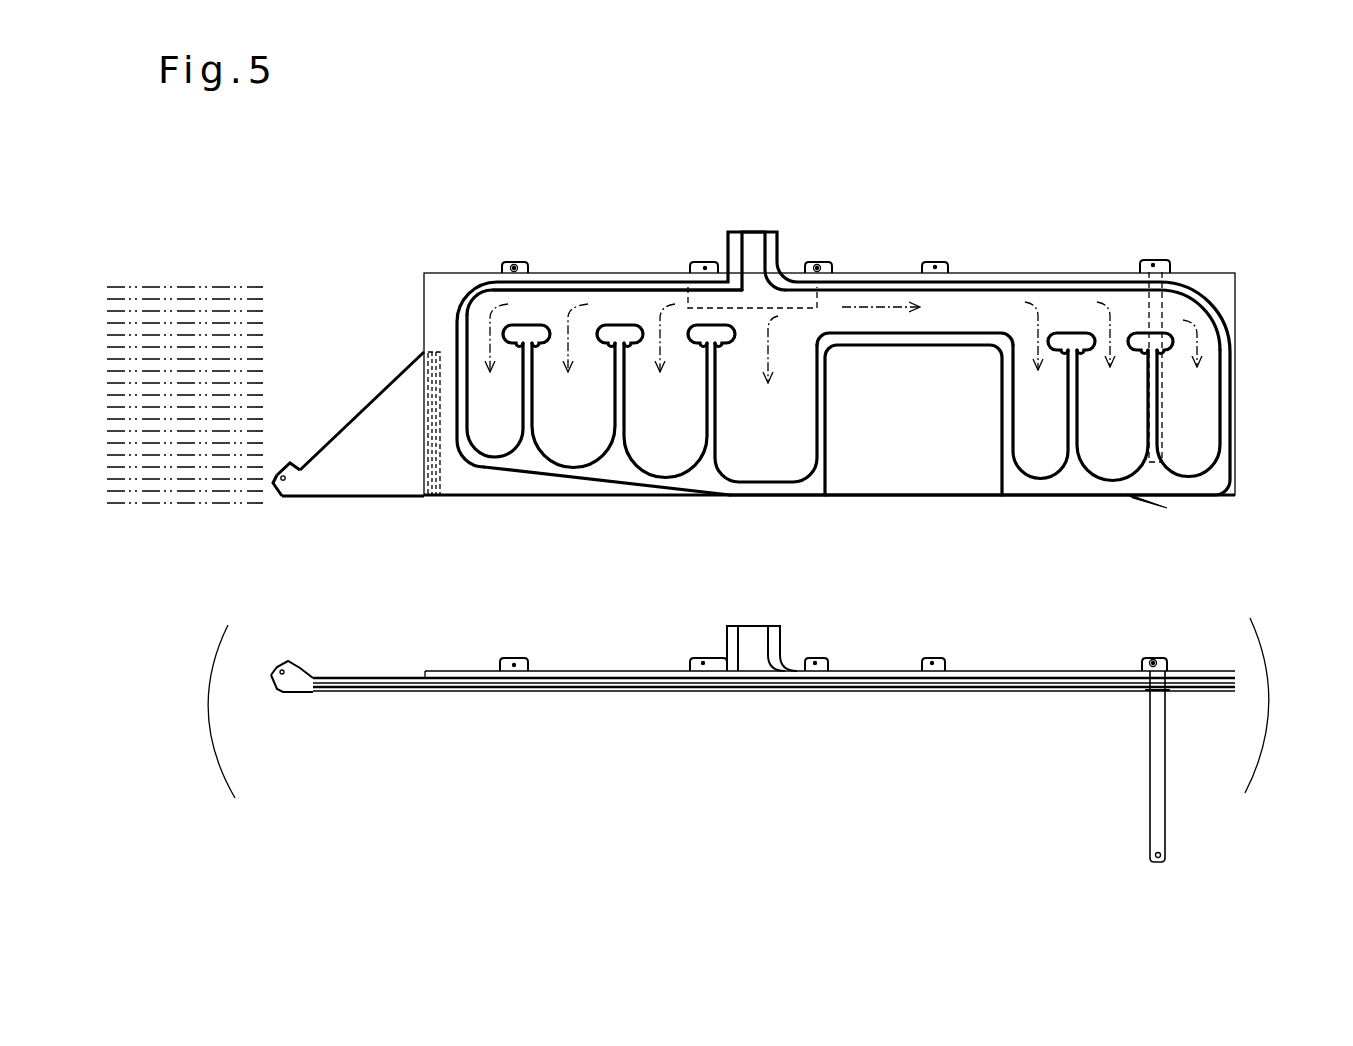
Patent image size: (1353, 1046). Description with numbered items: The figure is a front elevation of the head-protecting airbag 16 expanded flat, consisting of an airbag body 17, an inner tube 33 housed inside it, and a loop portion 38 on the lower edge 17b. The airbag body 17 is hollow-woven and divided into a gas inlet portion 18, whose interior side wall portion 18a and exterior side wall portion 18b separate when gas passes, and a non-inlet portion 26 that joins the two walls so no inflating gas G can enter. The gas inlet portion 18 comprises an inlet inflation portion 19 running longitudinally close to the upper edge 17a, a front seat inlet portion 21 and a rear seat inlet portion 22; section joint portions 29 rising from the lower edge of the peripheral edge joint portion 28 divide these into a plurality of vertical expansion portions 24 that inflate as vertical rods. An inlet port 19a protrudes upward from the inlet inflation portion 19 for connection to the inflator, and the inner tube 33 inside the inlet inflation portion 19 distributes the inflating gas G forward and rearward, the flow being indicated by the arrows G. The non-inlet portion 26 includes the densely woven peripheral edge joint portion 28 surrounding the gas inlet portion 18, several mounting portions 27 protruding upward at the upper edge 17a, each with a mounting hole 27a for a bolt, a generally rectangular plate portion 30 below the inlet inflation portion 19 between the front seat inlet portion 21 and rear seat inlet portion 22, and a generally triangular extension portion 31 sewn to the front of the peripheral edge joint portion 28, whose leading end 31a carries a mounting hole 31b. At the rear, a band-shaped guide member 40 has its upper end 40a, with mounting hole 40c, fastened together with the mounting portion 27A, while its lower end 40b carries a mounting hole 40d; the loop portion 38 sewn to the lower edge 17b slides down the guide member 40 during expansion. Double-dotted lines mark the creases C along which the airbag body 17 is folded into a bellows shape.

The airbag 16 is at (1022, 655).
The airbag body 17 is at (590, 518).
The upper edge 17a is at (878, 282).
The lower edge 17b is at (850, 483).
The gas inlet portion 18 is at (905, 407).
The interior side wall portion 18a is at (563, 278).
The exterior side wall portion 18b is at (600, 298).
The inlet inflation portion 19 is at (960, 300).
The inlet port 19a is at (752, 240).
The front seat inlet portion 21 is at (695, 473).
The rear seat inlet portion 22 is at (1197, 476).
The vertical expansion portions 24 is at (493, 433).
The non-inlet portion 26 is at (852, 435).
The mounting portions 27 is at (507, 262).
The mounting hole 27a is at (515, 262).
The mounting portion 27A is at (1163, 262).
The peripheral edge joint portion 28 is at (1228, 289).
The section joint portions 29 is at (532, 380).
The plate portion 30 is at (910, 483).
The extension portion 31 is at (373, 490).
The leading end 31a is at (292, 462).
The mounting hole 31b is at (281, 492).
The inner tube 33 is at (748, 302).
The loop portion 38 is at (1158, 510).
The guide member 40 is at (1172, 283).
The upper end 40a is at (1152, 260).
The lower end 40b is at (1162, 458).
The mounting hole 40c is at (1143, 266).
The mounting hole 40d is at (1160, 460).
The creases C is at (150, 503).
The inflating gas G is at (848, 356).